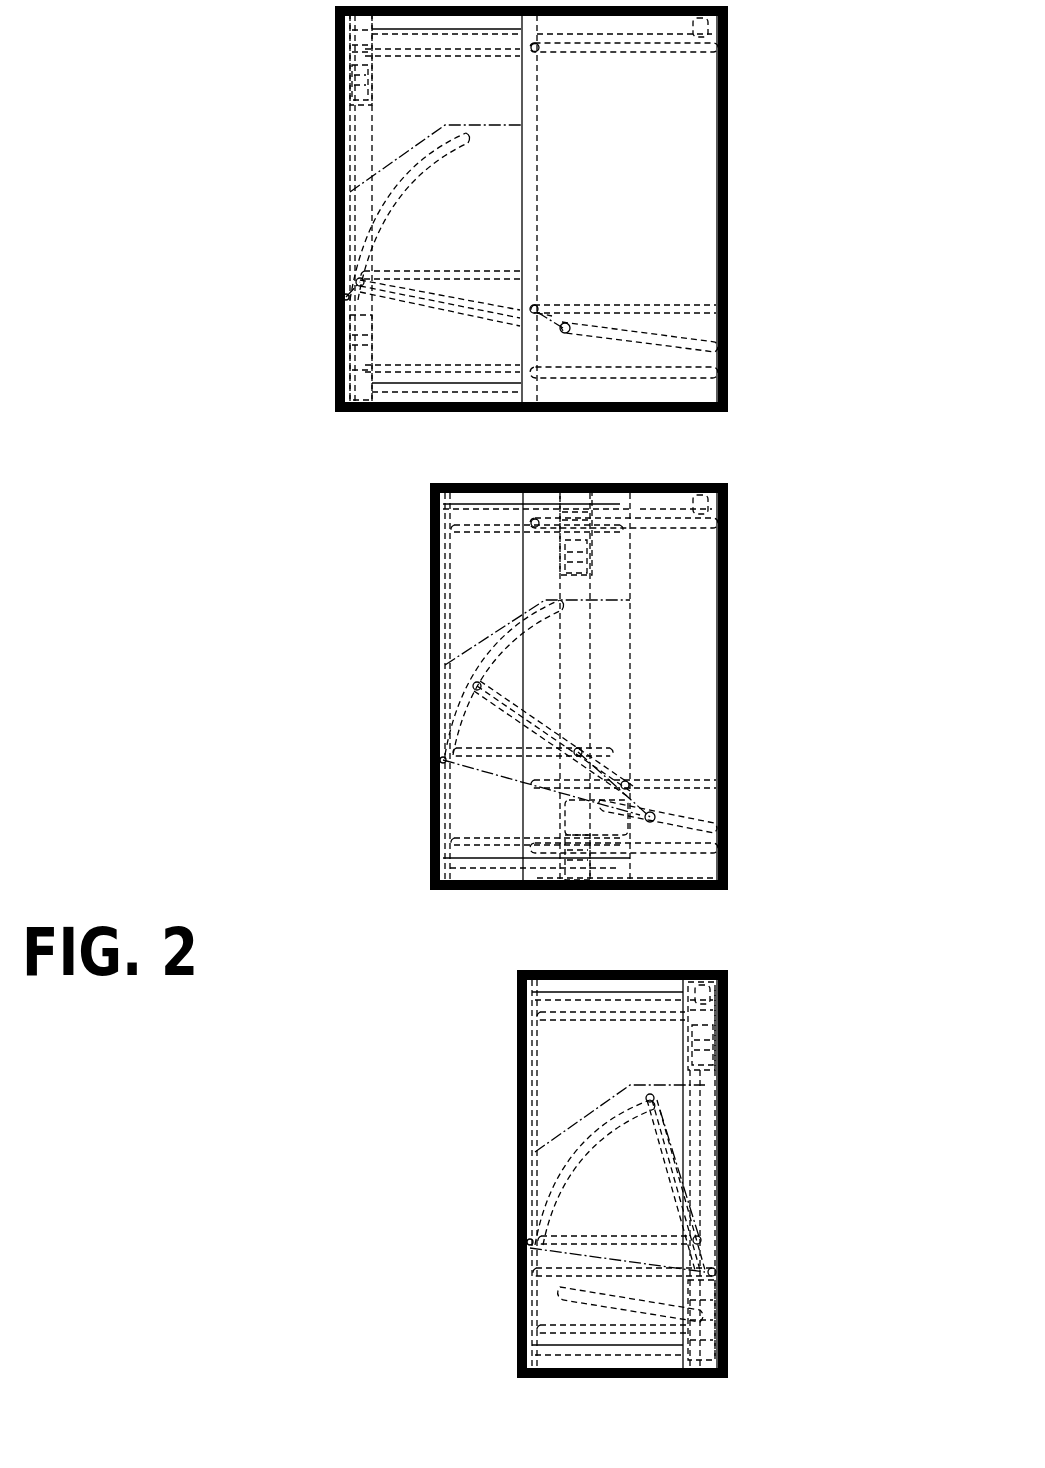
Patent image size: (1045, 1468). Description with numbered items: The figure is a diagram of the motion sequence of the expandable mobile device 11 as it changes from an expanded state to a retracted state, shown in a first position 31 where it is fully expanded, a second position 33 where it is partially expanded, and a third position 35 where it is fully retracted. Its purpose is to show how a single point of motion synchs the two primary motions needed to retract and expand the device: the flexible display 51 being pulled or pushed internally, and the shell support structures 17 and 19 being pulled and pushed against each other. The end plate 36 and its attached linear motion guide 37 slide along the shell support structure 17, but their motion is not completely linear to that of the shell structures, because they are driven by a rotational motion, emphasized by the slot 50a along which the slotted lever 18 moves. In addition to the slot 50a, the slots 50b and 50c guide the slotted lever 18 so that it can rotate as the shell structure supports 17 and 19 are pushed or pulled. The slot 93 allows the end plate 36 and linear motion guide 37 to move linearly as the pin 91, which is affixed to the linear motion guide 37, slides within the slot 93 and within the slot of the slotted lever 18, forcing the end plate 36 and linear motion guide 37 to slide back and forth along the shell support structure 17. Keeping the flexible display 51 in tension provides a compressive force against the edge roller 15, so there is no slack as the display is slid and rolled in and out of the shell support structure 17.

The expandable mobile device 11 is at (305, 119).
The edge roller 15 is at (343, 300).
The shell support structure 17 is at (350, 240).
The slotted lever 18 is at (433, 300).
The shell support structure 19 is at (728, 165).
The first position 31 is at (805, 95).
The second position 33 is at (810, 560).
The third position 35 is at (810, 1030).
The end plate 36 is at (355, 53).
The linear motion guide 37 is at (374, 70).
The slot 50a is at (418, 160).
The slot 50b is at (662, 305).
The slot 50c is at (641, 345).
The flexible display 51 is at (718, 60).
The pin 91 is at (366, 278).
The slot 93 is at (480, 275).